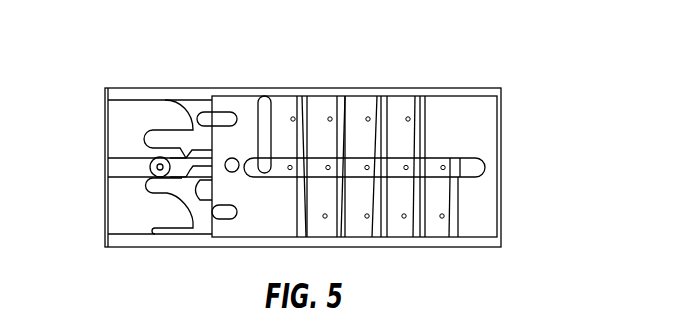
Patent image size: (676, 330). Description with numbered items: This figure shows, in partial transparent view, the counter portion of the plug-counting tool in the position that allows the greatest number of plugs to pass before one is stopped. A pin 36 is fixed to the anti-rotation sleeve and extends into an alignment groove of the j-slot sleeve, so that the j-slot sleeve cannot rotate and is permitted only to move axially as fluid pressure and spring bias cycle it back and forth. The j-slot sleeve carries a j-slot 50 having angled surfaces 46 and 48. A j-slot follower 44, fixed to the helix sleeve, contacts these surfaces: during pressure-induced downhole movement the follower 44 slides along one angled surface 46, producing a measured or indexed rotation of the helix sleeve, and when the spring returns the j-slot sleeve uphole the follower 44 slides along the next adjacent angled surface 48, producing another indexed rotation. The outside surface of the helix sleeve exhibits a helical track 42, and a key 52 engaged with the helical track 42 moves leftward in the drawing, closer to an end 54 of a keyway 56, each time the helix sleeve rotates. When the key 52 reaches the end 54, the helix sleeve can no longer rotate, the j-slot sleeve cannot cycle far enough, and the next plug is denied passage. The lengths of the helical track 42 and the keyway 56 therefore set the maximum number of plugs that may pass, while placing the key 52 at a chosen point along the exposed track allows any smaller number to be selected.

The pin 36 is at (152, 162).
The helical track 42 is at (270, 98).
The j-slot follower 44 is at (232, 172).
The angled surface 46 is at (183, 167).
The angled surface 48 is at (207, 148).
The j-slot 50 is at (207, 168).
The key 52 is at (458, 168).
The end 54 is at (264, 155).
The keyway 56 is at (328, 167).